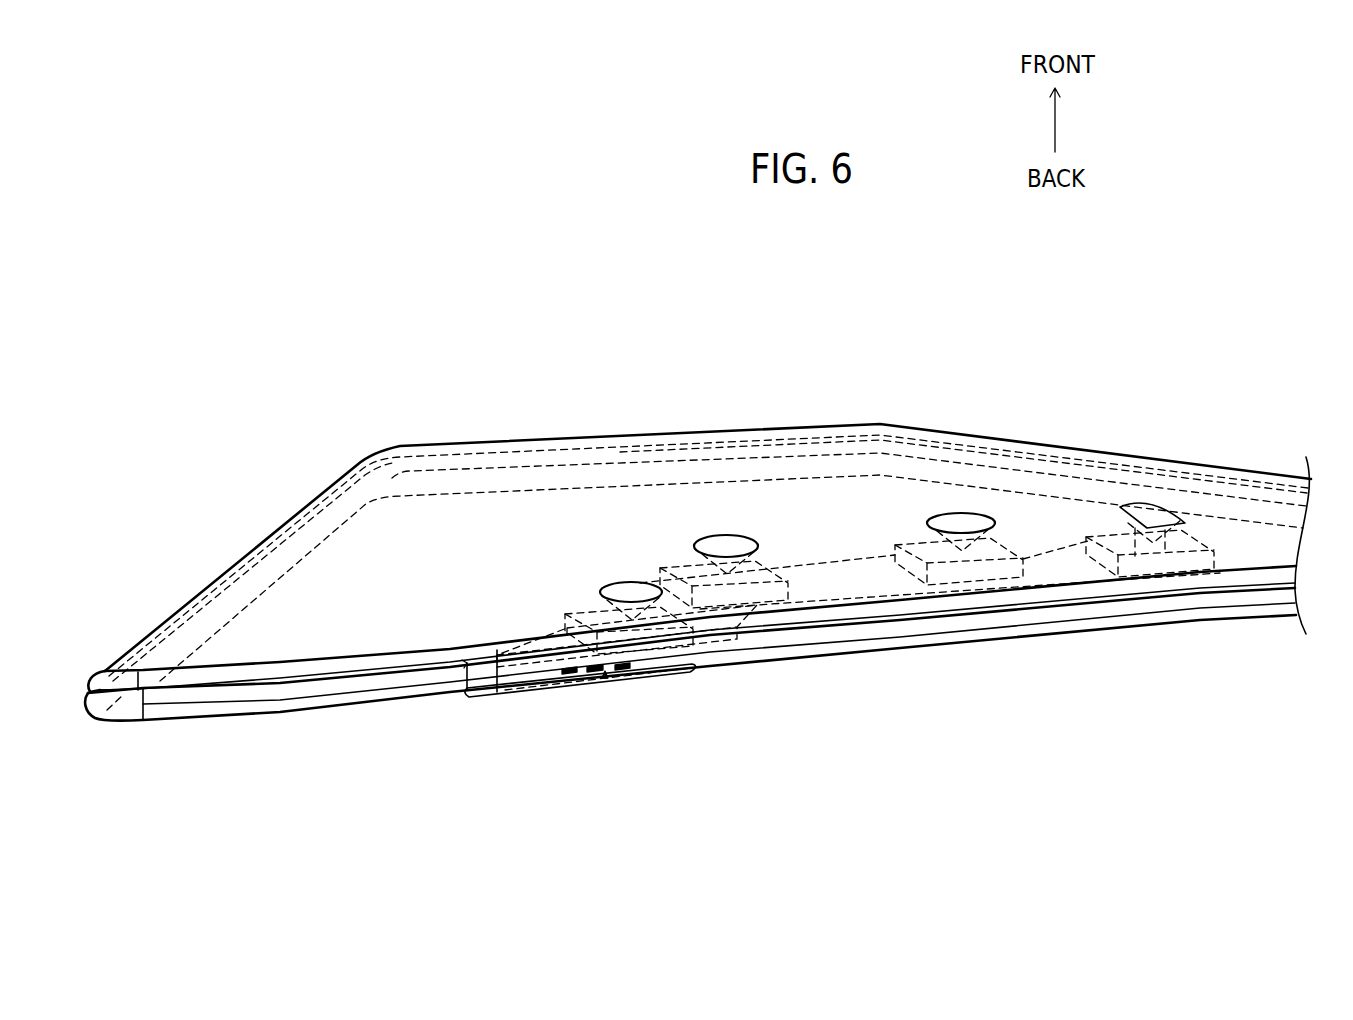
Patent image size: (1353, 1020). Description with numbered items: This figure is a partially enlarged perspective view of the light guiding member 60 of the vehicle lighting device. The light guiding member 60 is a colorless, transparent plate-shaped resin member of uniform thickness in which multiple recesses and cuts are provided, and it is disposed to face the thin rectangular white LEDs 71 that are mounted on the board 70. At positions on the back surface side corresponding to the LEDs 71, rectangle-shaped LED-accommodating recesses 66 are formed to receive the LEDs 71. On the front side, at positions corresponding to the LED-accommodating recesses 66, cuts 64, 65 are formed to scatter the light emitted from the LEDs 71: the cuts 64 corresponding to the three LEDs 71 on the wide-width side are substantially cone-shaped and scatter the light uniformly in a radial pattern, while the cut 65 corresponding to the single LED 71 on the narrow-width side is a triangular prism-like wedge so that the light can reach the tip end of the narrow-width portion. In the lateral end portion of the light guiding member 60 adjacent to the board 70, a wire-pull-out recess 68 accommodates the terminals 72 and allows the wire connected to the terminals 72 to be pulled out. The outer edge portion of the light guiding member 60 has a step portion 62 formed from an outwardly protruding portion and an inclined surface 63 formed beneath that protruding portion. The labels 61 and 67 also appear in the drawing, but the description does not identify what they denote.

The light guiding member 60 is at (431, 428).
The top plate 61 is at (318, 560).
The step portion 62 is at (94, 676).
The inclined surface 63 is at (187, 717).
The cuts 64 is at (632, 580).
The cut 65 is at (1155, 508).
The LED-accommodating recesses 66 is at (683, 567).
The circuit board 67 is at (568, 627).
The wire-pull-out recess 68 is at (605, 676).
The board 70 is at (500, 698).
The LEDs 71 is at (1177, 413).
The terminals 72 is at (570, 675).